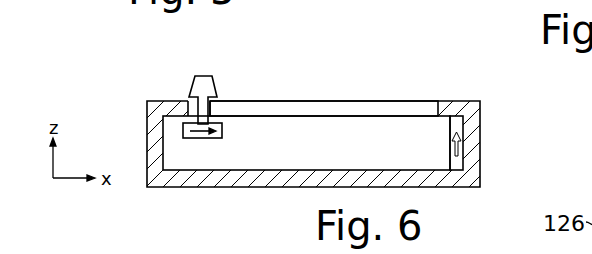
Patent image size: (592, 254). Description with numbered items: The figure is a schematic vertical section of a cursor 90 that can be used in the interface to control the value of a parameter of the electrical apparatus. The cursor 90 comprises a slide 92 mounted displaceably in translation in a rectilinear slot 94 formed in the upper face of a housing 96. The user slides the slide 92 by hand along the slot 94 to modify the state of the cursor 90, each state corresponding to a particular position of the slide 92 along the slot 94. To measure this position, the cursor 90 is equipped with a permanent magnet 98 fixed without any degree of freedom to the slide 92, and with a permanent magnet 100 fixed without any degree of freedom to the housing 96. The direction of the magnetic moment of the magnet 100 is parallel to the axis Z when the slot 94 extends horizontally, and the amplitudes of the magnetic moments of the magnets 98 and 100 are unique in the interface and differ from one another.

The cursor 90 is at (294, 73).
The slide 92 is at (202, 77).
The rectilinear slot 94 is at (417, 109).
The housing 96 is at (148, 119).
The permanent magnet 98 is at (222, 130).
The permanent magnet 100 is at (462, 163).